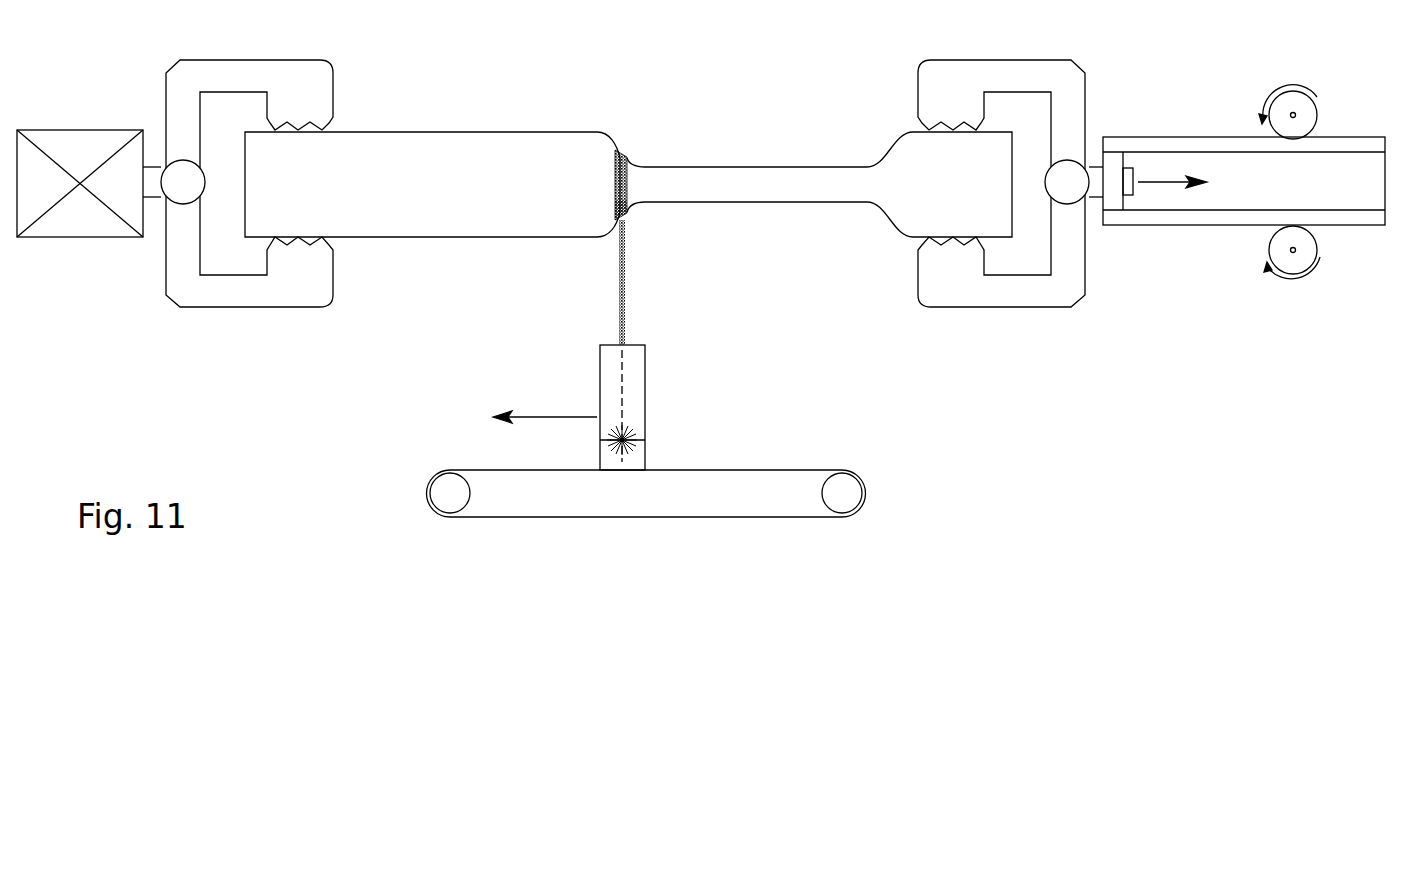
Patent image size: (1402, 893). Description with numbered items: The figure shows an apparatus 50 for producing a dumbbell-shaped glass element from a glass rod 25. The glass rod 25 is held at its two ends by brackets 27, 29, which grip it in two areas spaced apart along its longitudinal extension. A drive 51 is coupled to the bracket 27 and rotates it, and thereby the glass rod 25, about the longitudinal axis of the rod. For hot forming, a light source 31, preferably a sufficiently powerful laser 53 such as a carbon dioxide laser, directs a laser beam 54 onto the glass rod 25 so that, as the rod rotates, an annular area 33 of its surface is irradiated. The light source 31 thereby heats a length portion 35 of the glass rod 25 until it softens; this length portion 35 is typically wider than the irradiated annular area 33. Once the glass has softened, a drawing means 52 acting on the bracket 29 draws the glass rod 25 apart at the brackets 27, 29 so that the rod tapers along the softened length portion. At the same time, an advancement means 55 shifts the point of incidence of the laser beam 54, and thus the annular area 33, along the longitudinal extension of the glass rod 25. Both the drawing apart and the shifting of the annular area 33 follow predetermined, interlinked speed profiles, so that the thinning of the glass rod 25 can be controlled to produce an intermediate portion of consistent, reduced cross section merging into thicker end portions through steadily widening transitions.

The glass rod 25 is at (460, 237).
The bracket 27 is at (287, 307).
The bracket 29 is at (997, 307).
The light source 31 is at (624, 407).
The annular area 33 is at (623, 155).
The length portion 35 is at (626, 200).
The apparatus 50 is at (343, 452).
The drive 51 is at (67, 237).
The drawing means 52 is at (1333, 225).
The laser 53 is at (645, 368).
The laser beam 54 is at (625, 303).
The advancement means 55 is at (863, 507).